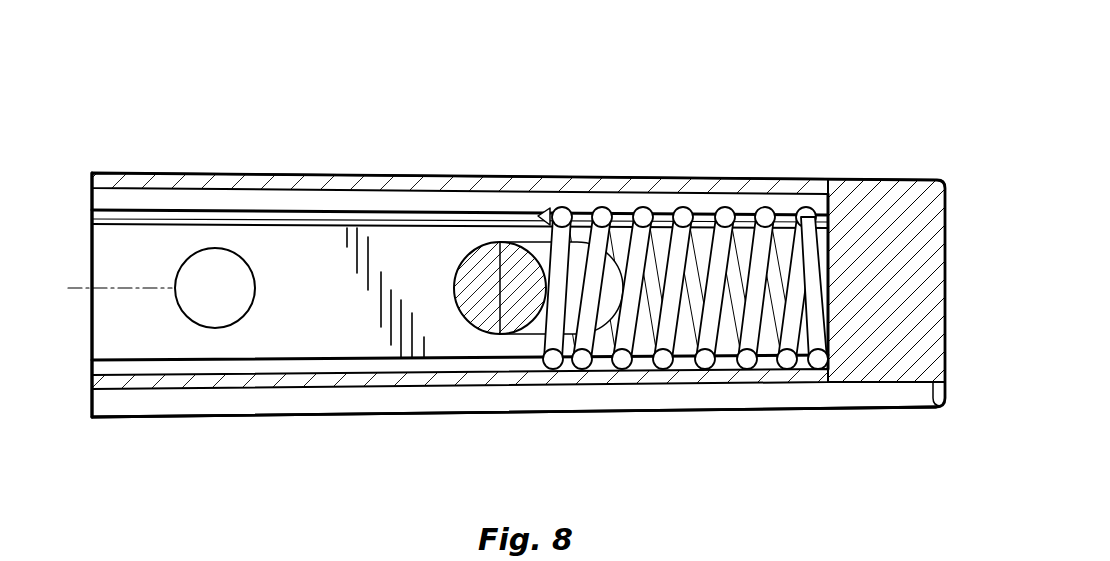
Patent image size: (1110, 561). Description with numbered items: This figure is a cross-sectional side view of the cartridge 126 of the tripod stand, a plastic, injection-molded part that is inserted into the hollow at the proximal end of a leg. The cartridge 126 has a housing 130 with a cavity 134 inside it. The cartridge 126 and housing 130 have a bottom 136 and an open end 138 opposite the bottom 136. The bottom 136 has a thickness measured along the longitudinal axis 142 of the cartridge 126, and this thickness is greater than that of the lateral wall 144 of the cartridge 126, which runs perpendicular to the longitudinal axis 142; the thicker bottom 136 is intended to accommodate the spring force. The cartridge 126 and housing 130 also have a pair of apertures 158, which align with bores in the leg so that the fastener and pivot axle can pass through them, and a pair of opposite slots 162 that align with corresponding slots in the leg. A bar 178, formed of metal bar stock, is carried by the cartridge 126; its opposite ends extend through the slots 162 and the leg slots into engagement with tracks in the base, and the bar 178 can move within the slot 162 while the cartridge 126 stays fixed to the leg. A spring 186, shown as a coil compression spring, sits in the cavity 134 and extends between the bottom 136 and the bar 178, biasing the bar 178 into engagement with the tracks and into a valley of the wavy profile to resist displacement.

The cartridge 126 is at (750, 144).
The housing 130 is at (758, 392).
The cavity 134 is at (300, 322).
The bottom 136 is at (940, 335).
The open end 138 is at (102, 331).
The longitudinal axis 142 is at (92, 283).
The lateral wall 144 is at (683, 306).
The apertures 158 is at (213, 328).
The slots 162 is at (537, 334).
The bar 178 is at (507, 265).
The spring 186 is at (675, 265).